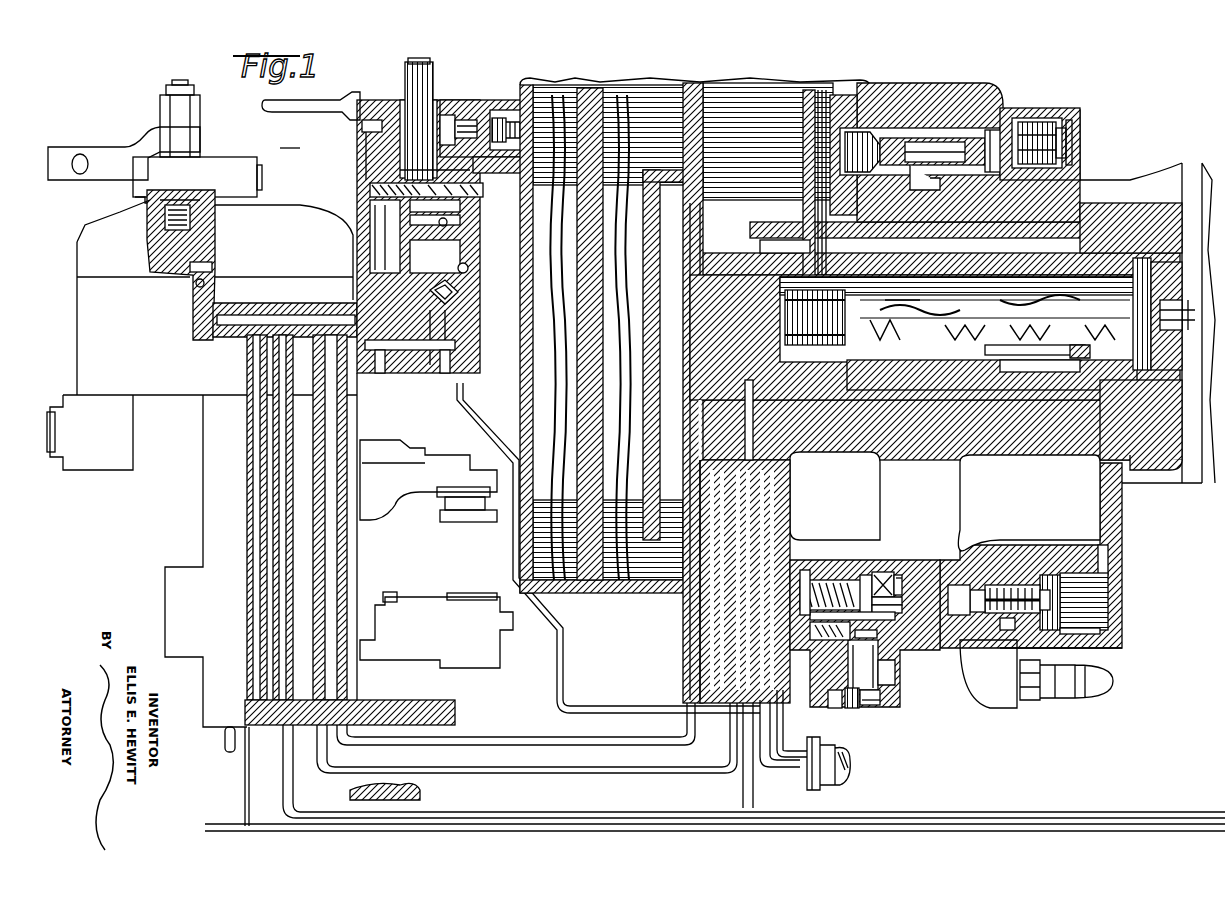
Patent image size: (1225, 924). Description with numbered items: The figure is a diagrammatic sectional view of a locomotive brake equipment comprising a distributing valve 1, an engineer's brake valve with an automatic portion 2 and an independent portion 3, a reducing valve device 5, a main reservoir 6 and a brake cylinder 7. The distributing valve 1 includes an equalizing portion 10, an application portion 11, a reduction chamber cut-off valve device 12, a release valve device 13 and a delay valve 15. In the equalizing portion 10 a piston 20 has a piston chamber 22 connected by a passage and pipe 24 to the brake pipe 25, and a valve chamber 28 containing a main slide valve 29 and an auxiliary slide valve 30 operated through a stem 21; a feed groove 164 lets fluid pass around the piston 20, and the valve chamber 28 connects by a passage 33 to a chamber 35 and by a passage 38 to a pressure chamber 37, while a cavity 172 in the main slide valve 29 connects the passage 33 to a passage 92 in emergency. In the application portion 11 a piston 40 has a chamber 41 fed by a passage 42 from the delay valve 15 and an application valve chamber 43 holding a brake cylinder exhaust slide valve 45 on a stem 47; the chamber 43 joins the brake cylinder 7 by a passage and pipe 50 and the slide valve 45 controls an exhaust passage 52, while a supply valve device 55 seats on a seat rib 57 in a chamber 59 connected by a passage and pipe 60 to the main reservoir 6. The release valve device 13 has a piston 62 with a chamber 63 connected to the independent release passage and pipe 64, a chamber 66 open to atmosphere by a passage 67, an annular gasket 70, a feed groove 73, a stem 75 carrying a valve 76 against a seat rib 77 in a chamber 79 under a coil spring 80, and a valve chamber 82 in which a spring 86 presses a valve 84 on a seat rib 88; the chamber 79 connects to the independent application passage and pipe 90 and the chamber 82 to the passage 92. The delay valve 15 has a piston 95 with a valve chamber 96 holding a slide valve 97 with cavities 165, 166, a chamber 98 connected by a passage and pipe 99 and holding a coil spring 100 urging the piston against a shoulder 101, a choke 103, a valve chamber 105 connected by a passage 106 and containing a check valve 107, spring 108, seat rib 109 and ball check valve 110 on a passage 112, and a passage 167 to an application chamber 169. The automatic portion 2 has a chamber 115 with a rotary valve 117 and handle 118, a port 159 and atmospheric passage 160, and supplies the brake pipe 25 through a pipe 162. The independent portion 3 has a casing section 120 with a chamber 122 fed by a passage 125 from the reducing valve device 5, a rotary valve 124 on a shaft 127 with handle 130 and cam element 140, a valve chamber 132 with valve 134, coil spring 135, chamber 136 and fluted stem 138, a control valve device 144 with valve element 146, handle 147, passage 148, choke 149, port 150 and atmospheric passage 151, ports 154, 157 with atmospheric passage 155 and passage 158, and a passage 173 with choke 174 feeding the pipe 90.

The distributing valve 1 is at (1160, 475).
The automatic portion 2 is at (227, 146).
The independent portion 3 is at (351, 155).
The reducing valve device 5 is at (398, 612).
The main reservoir 6 is at (420, 792).
The brake cylinder 7 is at (808, 785).
The equalizing portion 10 is at (1125, 188).
The application portion 11 is at (870, 85).
The reduction chamber cut-off valve device 12 is at (1134, 517).
The release valve device 13 is at (1134, 579).
The delay valve 15 is at (893, 692).
The piston 20 is at (1137, 265).
The stem 21 is at (910, 305).
The piston chamber 22 is at (1165, 265).
The passage and pipe 24 is at (700, 207).
The brake pipe 25 is at (210, 826).
The valve chamber 28 is at (1085, 270).
The main slide valve 29 is at (890, 355).
The auxiliary slide valve 30 is at (995, 305).
The passage 33 is at (820, 400).
The chamber 35 is at (790, 240).
The pressure chamber 37 is at (567, 592).
The passage 38 is at (595, 300).
The piston 40 is at (812, 95).
The chamber 41 is at (795, 130).
The passage 42 is at (760, 150).
The application valve chamber 43 is at (915, 130).
The brake cylinder exhaust slide valve 45 is at (930, 125).
The stem 47 is at (890, 140).
The passage and pipe 50 is at (790, 215).
The exhaust passage 52 is at (908, 191).
The supply valve device 55 is at (1045, 115).
The seat rib 57 is at (990, 125).
The chamber 59 is at (1015, 108).
The passage and pipe 60 is at (283, 524).
The piston 62 is at (1060, 605).
The chamber 63 is at (1110, 600).
The independent release passage and pipe 64 is at (345, 422).
The chamber 66 is at (1110, 633).
The passage 67 is at (1070, 648).
The annular gasket 70 is at (1022, 585).
The feed groove 73 is at (1045, 585).
The stem 75 is at (1040, 700).
The valve 76 is at (1000, 585).
The seat rib 77 is at (1030, 592).
The chamber 79 is at (1010, 625).
The coil spring 80 is at (745, 375).
The valve chamber 82 is at (955, 585).
The valve 84 is at (895, 622).
The spring 86 is at (895, 610).
The seat rib 88 is at (980, 630).
The independent application passage and pipe 90 is at (333, 318).
The passage 92 is at (700, 640).
The piston 95 is at (885, 660).
The valve chamber 96 is at (875, 690).
The slide valve 97 is at (870, 710).
The chamber 98 is at (830, 620).
The passage and pipe 99 is at (330, 558).
The coil spring 100 is at (840, 595).
The shoulder 101 is at (880, 640).
The choke 103 is at (795, 700).
The valve chamber 105 is at (868, 585).
The passage 106 is at (815, 600).
The check valve 107 is at (898, 585).
The spring 108 is at (880, 580).
The seat rib 109 is at (898, 598).
The ball check valve 110 is at (900, 582).
The passage 112 is at (888, 677).
The chamber 115 is at (205, 220).
The rotary valve 117 is at (210, 240).
The handle 118 is at (58, 160).
The casing section 120 is at (487, 100).
The chamber 122 is at (375, 175).
The rotary valve 124 is at (478, 187).
The passage 125 is at (260, 494).
The shaft 127 is at (360, 155).
The handle 130 is at (310, 98).
The valve chamber 132 is at (517, 108).
The valve 134 is at (503, 112).
The coil spring 135 is at (538, 112).
The chamber 136 is at (465, 112).
The fluted stem 138 is at (448, 105).
The cam element 140 is at (405, 100).
The control valve device 144 is at (478, 292).
The valve element 146 is at (445, 310).
The handle 147 is at (478, 268).
The passage 148 is at (418, 383).
The choke 149 is at (365, 380).
The port 150 is at (455, 300).
The atmospheric passage 151 is at (478, 243).
The port 154 is at (478, 207).
The atmospheric passage 155 is at (478, 224).
The port 157 is at (370, 178).
The passage 158 is at (225, 340).
The port 159 is at (210, 262).
The atmospheric passage 160 is at (193, 290).
The pipe 162 is at (240, 762).
The feed groove 164 is at (1141, 425).
The cavity 165 is at (850, 695).
The cavity 166 is at (835, 700).
The passage 167 is at (700, 620).
The application chamber 169 is at (613, 592).
The cavity 172 is at (1090, 352).
The passage 173 is at (370, 232).
The choke 174 is at (395, 253).